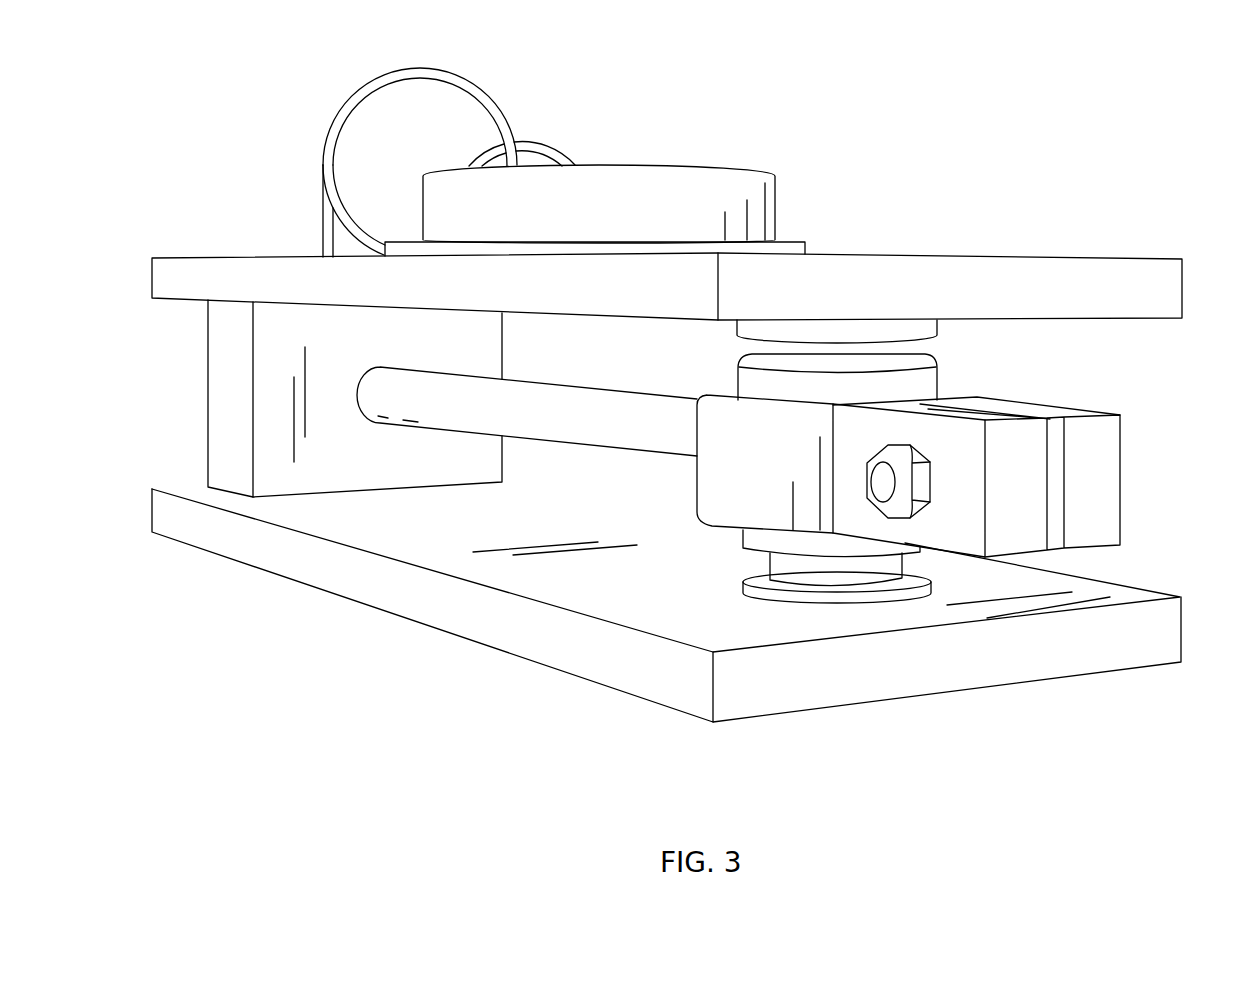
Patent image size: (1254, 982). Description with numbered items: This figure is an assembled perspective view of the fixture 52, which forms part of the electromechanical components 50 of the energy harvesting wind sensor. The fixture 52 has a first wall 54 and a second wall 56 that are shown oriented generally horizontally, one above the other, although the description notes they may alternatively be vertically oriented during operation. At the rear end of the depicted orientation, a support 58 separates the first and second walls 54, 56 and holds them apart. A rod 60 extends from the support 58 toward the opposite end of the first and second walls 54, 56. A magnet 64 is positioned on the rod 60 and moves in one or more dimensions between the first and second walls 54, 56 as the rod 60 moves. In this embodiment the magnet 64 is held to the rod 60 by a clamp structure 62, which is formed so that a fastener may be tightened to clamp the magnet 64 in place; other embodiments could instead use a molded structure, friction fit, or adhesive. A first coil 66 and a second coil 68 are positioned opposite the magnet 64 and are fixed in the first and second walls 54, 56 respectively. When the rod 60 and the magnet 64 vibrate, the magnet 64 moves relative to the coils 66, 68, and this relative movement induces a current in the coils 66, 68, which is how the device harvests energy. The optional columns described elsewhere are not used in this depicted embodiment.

The electromechanical components 50 is at (1035, 122).
The fixture 52 is at (782, 735).
The first wall 54 is at (627, 665).
The second wall 56 is at (1100, 273).
The support 58 is at (230, 368).
The rod 60 is at (578, 425).
The clamp structure 62 is at (1122, 487).
The magnet 64 is at (903, 380).
The first coil 66 is at (864, 597).
The second coil 68 is at (847, 332).